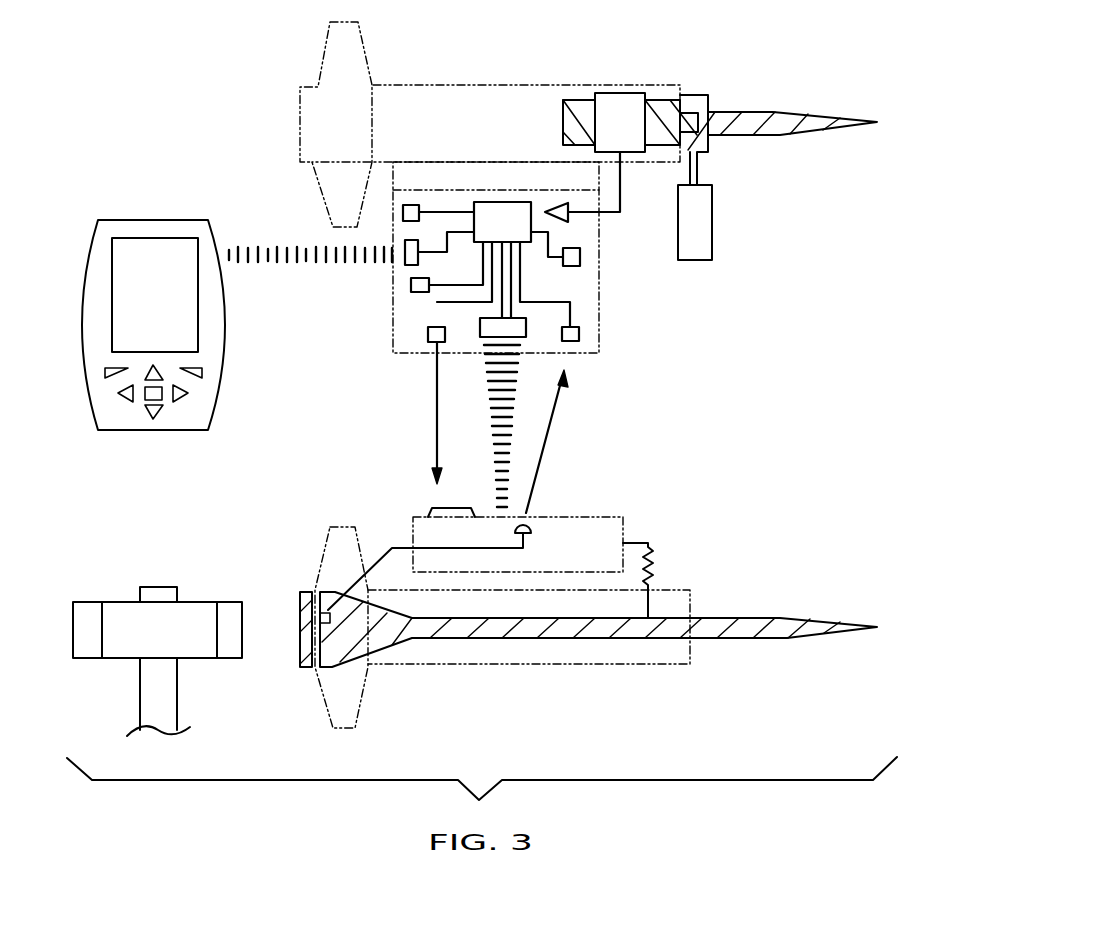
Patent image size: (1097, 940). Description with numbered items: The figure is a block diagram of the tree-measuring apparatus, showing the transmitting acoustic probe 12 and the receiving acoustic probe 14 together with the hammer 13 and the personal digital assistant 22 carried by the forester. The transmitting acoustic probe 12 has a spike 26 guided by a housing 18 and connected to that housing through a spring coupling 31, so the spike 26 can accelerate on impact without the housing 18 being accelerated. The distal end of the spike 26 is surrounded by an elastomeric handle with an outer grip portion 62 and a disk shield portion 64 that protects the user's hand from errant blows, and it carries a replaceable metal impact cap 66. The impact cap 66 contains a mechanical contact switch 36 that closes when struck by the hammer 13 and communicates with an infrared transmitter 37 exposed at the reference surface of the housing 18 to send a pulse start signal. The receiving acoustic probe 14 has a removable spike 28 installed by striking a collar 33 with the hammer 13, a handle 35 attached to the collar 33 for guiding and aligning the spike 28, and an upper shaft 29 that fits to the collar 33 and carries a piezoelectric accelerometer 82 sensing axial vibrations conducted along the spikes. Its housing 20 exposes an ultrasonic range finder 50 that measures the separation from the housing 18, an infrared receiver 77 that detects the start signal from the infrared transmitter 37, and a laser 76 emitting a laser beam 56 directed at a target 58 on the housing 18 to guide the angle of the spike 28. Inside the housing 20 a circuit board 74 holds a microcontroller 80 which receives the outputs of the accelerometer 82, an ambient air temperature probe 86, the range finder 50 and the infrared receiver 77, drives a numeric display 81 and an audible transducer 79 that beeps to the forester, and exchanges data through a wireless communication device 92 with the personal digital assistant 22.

The transmitting acoustic probe 12 is at (750, 542).
The hammer 13 is at (118, 605).
The receiving acoustic probe 14 is at (744, 226).
The housing 18 is at (613, 515).
The second housing 20 is at (598, 360).
The personal digital assistant 22 is at (153, 218).
The spike 26 is at (827, 617).
The spike 28 is at (773, 137).
The upper shaft 29 is at (580, 100).
The spring coupling 31 is at (655, 570).
The collar 33 is at (697, 92).
The handle 35 is at (697, 262).
The mechanical contact switch 36 is at (318, 590).
The infrared transmitter 37 is at (530, 528).
The ultrasonic range finder 50 is at (525, 332).
The laser beam 56 is at (437, 410).
The target 58 is at (435, 508).
The outer grip portion 62 is at (462, 85).
The disk shield portion 64 is at (358, 42).
The impact cap 66 is at (308, 667).
The circuit board 74 is at (575, 283).
The laser 76 is at (430, 332).
The infrared receiver 77 is at (582, 332).
The audible transducer 79 is at (583, 257).
The microcontroller 80 is at (502, 202).
The numeric display 81 is at (400, 212).
The piezoelectric accelerometer 82 is at (617, 92).
The ambient air temperature probe 86 is at (420, 293).
The wireless communication device 92 is at (410, 265).